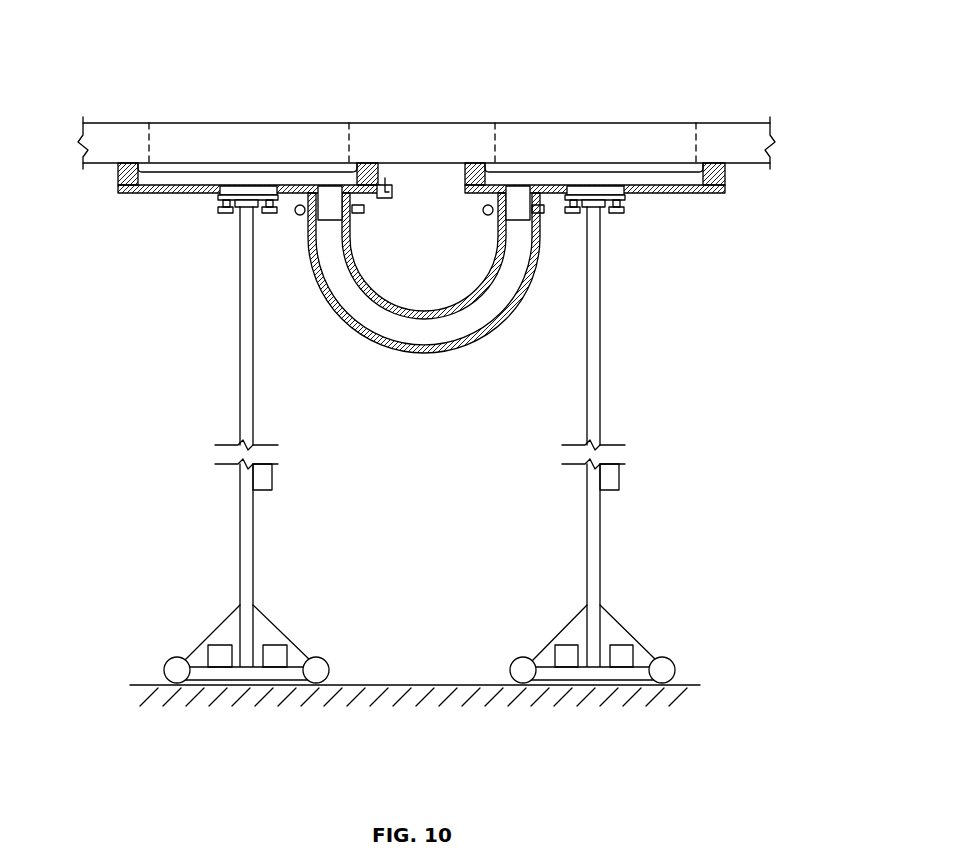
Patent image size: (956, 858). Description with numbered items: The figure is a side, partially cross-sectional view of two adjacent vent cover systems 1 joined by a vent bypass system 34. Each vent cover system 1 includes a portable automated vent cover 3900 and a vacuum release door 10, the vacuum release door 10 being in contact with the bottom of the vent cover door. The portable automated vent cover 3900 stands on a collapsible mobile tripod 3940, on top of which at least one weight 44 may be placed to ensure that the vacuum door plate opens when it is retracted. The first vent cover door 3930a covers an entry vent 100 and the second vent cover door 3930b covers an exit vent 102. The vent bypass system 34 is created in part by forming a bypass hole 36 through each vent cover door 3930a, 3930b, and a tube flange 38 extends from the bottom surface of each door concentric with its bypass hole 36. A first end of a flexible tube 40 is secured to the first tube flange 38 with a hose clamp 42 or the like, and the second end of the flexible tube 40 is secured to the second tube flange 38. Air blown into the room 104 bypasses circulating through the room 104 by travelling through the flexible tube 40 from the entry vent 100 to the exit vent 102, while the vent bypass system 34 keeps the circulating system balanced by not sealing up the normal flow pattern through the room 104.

The vent cover system 1 is at (183, 395).
The vacuum release door 10 is at (232, 223).
The vent bypass system 34 is at (430, 305).
The bypass hole 36 is at (419, 149).
The tube flange 38 is at (330, 198).
The flexible tube 40 is at (442, 353).
The hose clamp 42 is at (485, 210).
The weight 44 is at (272, 660).
The entry vent 100 is at (242, 143).
The exit vent 102 is at (595, 148).
The room 104 is at (447, 547).
The portable automated vent cover 3900 is at (454, 445).
The first vent cover door 3930a is at (163, 193).
The second vent cover door 3930b is at (703, 193).
The collapsible mobile tripod 3940 is at (452, 630).